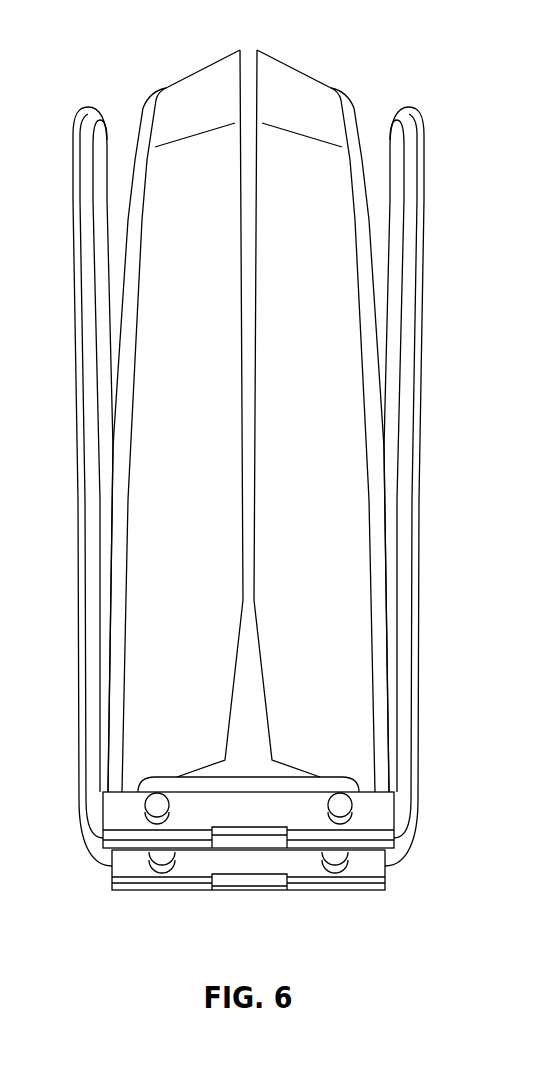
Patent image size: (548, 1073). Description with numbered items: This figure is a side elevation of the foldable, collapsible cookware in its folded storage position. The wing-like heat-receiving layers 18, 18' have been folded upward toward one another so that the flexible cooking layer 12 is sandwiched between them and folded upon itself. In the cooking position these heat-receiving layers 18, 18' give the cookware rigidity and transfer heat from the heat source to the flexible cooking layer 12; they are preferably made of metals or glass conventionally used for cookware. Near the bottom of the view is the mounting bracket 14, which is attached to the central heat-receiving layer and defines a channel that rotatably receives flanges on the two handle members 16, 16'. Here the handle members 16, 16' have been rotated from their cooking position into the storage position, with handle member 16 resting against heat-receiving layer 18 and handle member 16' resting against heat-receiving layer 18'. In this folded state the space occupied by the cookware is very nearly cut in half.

The flexible cooking layer 12 is at (190, 513).
The mounting bracket 14 is at (90, 814).
The handle member 16 is at (59, 486).
The handle member 16' is at (441, 486).
The wing-like heat-receiving layer 18 is at (106, 433).
The wing-like heat-receiving layer 18' is at (393, 433).